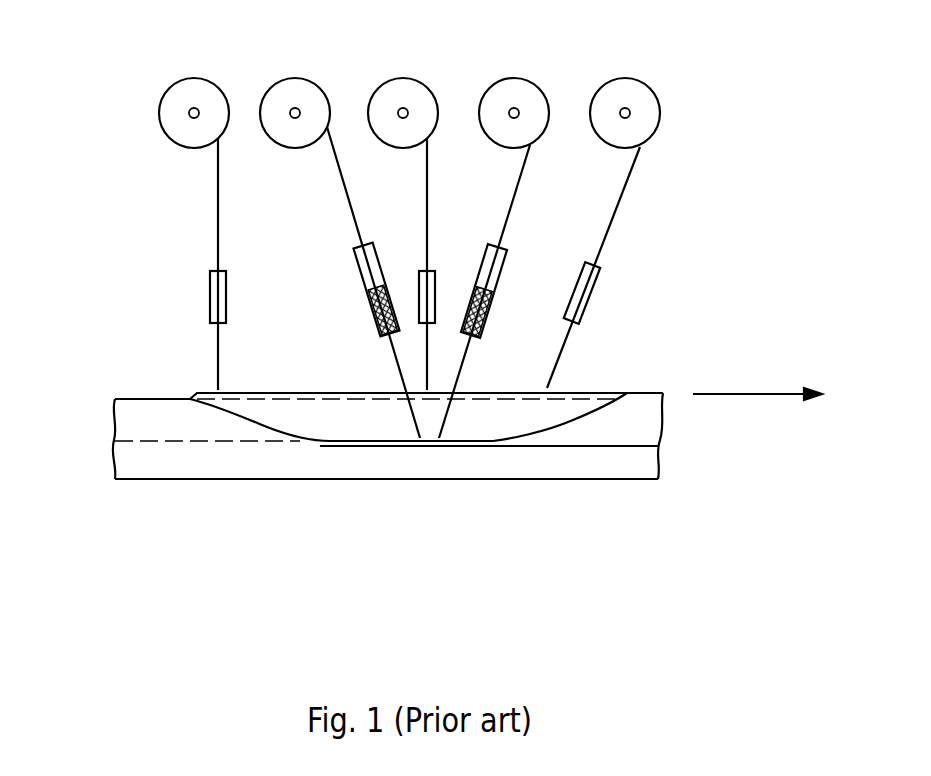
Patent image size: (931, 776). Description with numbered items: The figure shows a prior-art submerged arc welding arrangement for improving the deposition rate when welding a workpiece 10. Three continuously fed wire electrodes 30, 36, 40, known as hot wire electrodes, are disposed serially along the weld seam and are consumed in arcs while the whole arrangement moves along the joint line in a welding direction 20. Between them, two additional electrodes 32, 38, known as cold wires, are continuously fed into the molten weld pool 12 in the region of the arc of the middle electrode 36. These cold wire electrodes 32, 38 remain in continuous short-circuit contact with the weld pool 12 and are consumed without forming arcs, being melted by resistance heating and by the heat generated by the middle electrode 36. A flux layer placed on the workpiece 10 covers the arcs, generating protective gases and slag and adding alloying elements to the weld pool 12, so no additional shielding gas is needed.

The workpiece 10 is at (138, 412).
The molten weld pool 12 is at (473, 423).
The welding direction 20 is at (755, 395).
The wire electrode 30 is at (217, 208).
The additional electrode 32 is at (340, 160).
The middle electrode 36 is at (430, 160).
The additional electrode 38 is at (520, 170).
The wire electrode 40 is at (614, 215).